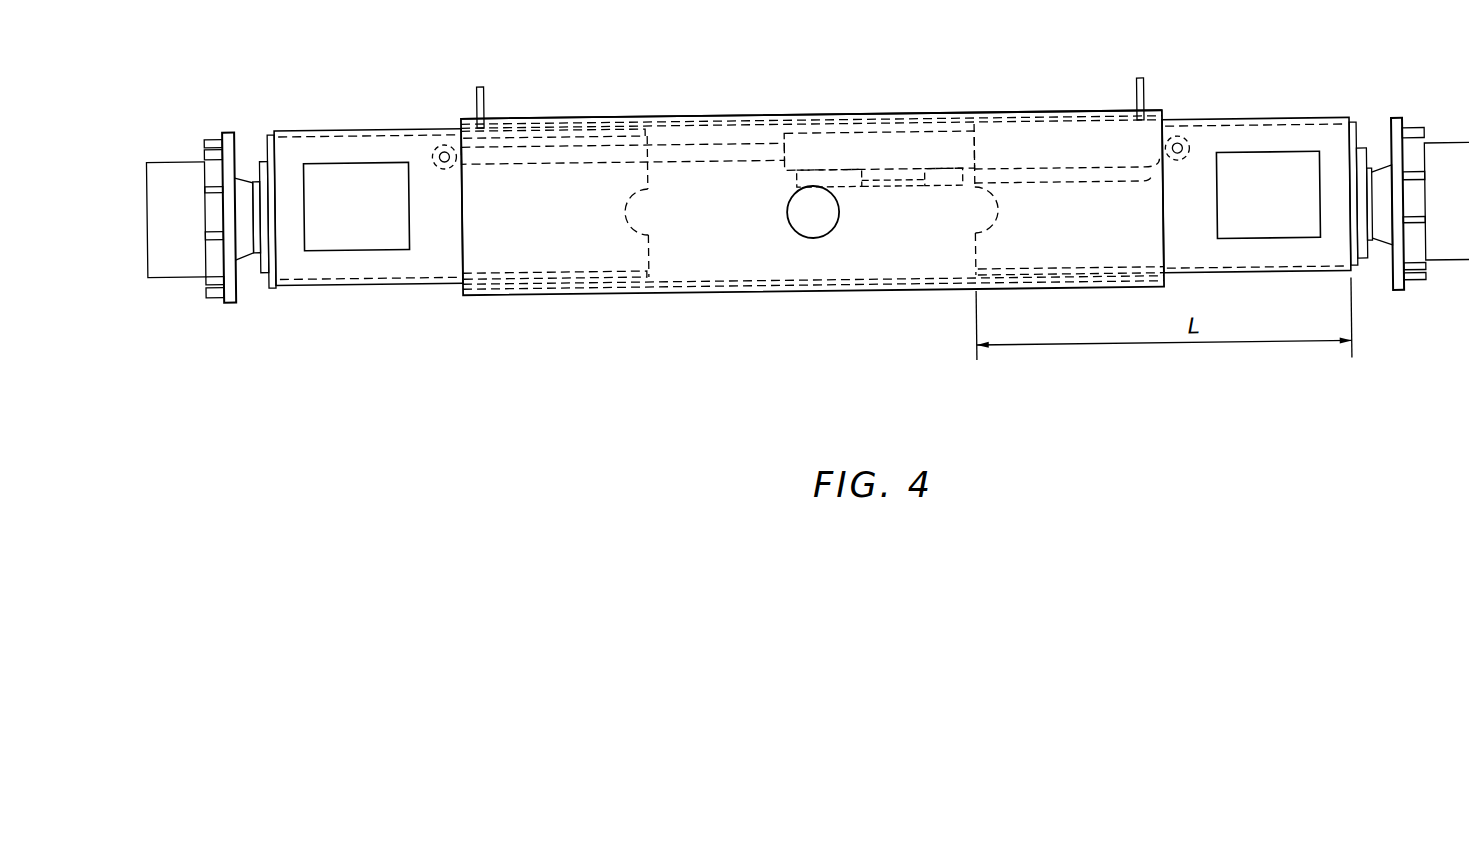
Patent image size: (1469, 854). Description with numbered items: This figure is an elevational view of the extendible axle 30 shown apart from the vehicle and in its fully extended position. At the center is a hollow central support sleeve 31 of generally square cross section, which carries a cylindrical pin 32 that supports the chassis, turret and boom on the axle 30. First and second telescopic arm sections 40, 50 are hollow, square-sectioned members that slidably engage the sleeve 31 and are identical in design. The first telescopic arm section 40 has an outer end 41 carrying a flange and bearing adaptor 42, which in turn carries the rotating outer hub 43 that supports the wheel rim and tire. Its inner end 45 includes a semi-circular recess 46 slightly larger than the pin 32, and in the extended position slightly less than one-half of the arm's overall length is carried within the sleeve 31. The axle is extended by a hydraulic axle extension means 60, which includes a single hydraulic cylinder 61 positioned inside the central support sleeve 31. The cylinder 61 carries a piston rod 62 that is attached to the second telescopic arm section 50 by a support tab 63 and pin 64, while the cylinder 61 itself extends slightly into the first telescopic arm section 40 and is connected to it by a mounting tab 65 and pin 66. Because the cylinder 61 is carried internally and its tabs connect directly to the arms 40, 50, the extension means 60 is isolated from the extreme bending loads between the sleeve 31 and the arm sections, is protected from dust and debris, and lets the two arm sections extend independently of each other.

The extendible axle 30 is at (812, 156).
The hollow central support sleeve 31 is at (811, 82).
The cylindrical pin 32 is at (826, 223).
The first telescopic arm section 40 is at (1256, 165).
The outer end 41 is at (1384, 163).
The flange and bearing adaptor 42 is at (1398, 268).
The rotating outer hub 43 is at (1427, 238).
The inner end 45 is at (975, 247).
The semi-circular recess 46 is at (995, 205).
The second telescopic arm section 50 is at (359, 169).
The hydraulic axle extension means 60 is at (717, 140).
The hydraulic cylinder 61 is at (878, 117).
The piston rod 62 is at (622, 113).
The support tab 63 is at (423, 140).
The pin 64 is at (421, 125).
The mounting tab 65 is at (1205, 136).
The pin 66 is at (1201, 113).